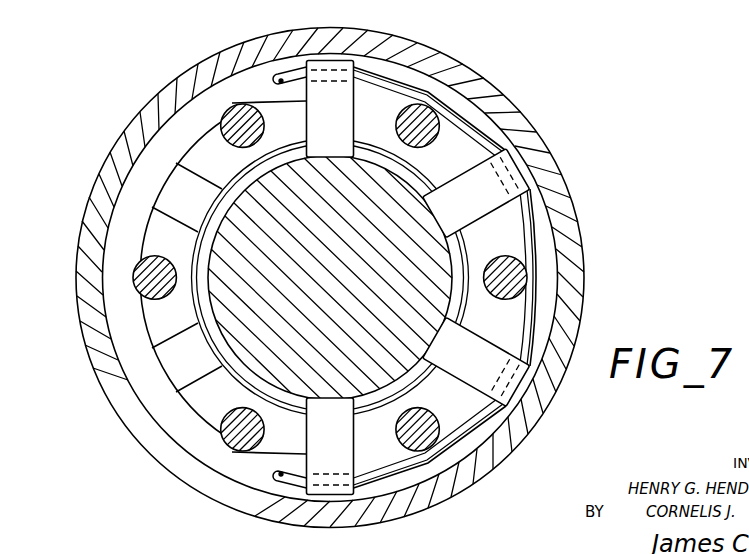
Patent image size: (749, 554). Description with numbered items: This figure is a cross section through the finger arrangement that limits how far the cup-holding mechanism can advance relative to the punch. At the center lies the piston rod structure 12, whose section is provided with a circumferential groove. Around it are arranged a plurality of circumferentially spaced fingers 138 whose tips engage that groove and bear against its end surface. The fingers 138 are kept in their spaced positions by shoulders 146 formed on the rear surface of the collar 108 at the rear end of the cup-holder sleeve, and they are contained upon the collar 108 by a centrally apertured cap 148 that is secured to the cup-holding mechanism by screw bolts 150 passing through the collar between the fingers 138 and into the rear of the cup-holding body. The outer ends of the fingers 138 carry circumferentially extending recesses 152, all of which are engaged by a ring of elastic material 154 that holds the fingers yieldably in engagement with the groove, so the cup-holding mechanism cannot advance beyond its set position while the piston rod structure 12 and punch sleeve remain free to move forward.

The piston rod structure 12 is at (333, 230).
The collar 108 is at (264, 295).
The fingers 138 is at (522, 177).
The shoulders 146 is at (198, 397).
The centrally apertured cap 148 is at (184, 74).
The screw bolts 150 is at (247, 105).
The circumferentially extending recesses 152 is at (173, 173).
The ring of elastic material 154 is at (478, 130).